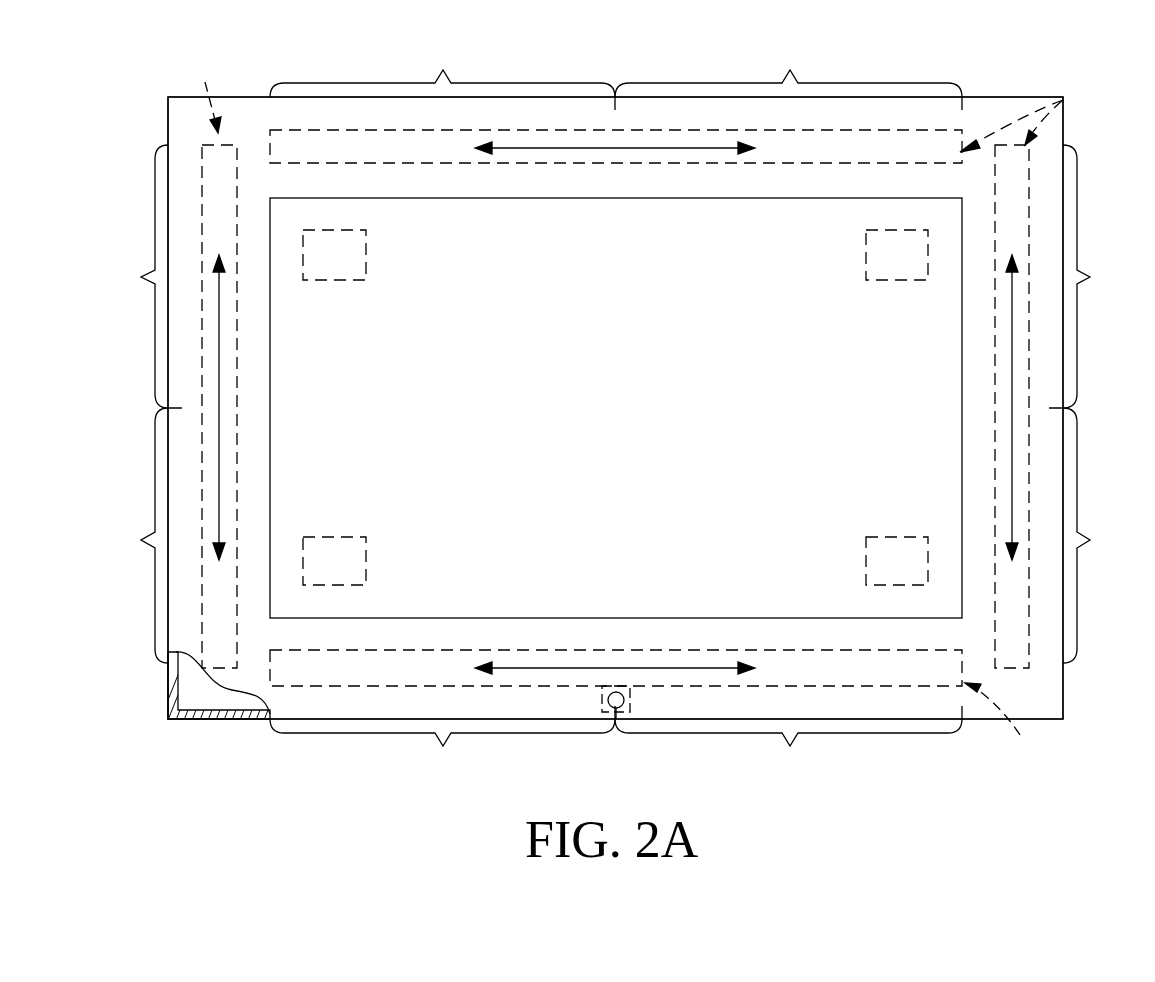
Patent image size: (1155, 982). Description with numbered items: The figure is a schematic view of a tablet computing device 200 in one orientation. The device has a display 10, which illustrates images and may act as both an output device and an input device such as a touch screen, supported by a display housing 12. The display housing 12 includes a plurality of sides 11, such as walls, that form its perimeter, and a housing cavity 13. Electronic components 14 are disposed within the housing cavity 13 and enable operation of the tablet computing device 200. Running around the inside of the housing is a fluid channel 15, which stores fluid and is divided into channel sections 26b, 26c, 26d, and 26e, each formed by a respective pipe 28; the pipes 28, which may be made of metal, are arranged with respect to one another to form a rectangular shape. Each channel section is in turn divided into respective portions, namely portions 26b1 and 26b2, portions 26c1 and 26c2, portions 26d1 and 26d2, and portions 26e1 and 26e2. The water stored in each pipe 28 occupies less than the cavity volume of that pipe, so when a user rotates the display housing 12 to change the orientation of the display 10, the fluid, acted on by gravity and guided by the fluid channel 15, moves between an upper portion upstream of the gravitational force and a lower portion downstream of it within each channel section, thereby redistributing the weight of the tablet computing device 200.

The tablet computing device 200 is at (574, 366).
The display housing 12 is at (160, 92).
The sides 11 is at (1041, 88).
The display 10 is at (264, 190).
The housing cavity 13 is at (196, 698).
The electronic components 14 is at (368, 262).
The fluid channel 15 is at (595, 148).
The channel section 26b is at (973, 132).
The portion of channel section 26b1 is at (442, 75).
The portion of channel section 26b2 is at (788, 75).
The channel section 26c is at (1025, 668).
The portion of channel section 26c1 is at (1098, 276).
The portion of channel section 26c2 is at (1105, 535).
The channel section 26d is at (228, 730).
The portion of channel section 26d1 is at (442, 741).
The portion of channel section 26d2 is at (788, 741).
The channel section 26e is at (205, 133).
The portion of channel section 26e1 is at (133, 276).
The portion of channel section 26e2 is at (126, 535).
The pipe 28 is at (650, 410).